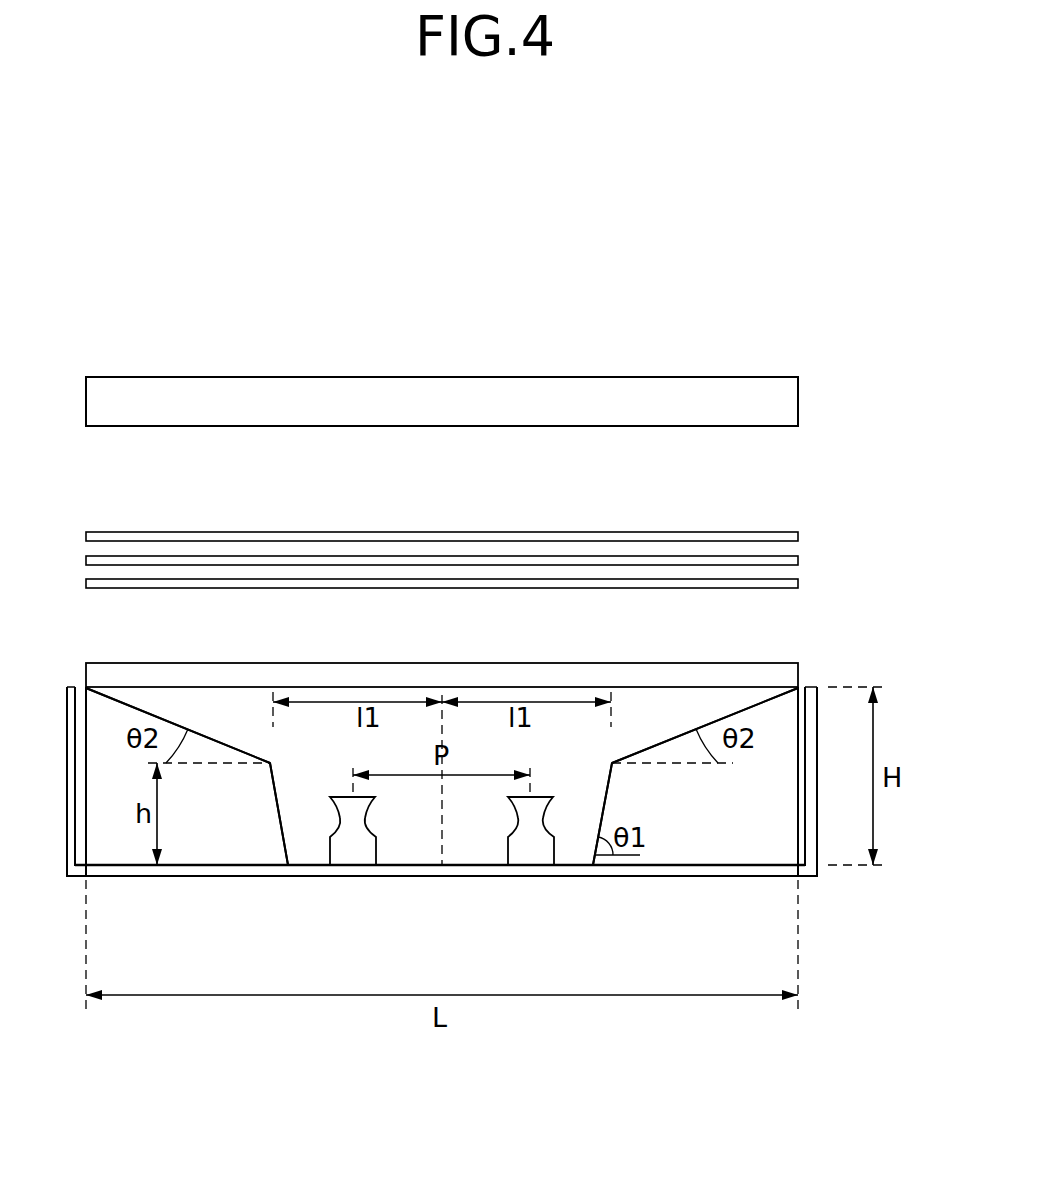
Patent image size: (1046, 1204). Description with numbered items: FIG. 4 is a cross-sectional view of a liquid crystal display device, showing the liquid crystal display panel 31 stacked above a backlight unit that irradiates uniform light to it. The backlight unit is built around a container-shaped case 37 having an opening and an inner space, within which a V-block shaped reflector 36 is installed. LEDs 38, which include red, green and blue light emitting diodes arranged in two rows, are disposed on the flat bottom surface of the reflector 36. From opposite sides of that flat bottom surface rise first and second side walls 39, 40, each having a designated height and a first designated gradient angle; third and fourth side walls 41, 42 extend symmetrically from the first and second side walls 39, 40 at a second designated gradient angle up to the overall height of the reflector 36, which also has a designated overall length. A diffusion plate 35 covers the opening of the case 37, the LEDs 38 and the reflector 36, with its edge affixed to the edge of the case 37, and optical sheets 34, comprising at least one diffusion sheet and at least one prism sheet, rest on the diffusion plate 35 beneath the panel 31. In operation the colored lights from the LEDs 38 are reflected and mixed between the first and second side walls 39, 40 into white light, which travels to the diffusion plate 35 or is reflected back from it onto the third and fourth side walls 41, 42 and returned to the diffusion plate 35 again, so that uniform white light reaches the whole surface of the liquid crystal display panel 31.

The liquid crystal display panel 31 is at (780, 392).
The optical sheets 34 is at (810, 531).
The diffusion plate 35 is at (788, 680).
The V-block shaped reflector 36 is at (733, 845).
The case 37 is at (813, 875).
The LEDs 38 is at (350, 817).
The first side wall 39 is at (287, 828).
The second side wall 40 is at (598, 826).
The third side wall 41 is at (200, 734).
The fourth side wall 42 is at (667, 740).